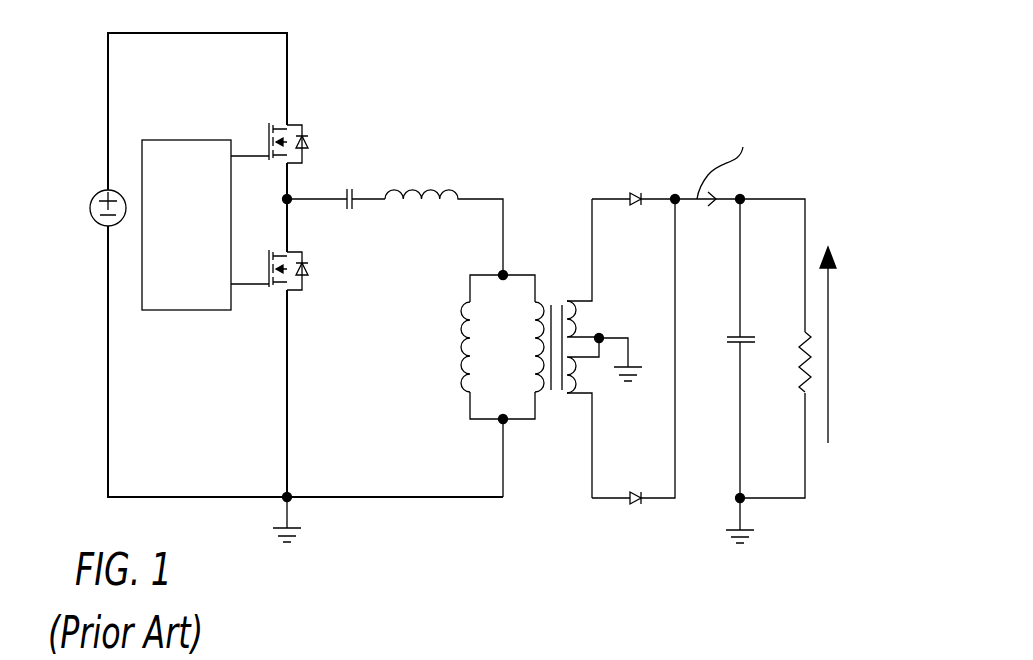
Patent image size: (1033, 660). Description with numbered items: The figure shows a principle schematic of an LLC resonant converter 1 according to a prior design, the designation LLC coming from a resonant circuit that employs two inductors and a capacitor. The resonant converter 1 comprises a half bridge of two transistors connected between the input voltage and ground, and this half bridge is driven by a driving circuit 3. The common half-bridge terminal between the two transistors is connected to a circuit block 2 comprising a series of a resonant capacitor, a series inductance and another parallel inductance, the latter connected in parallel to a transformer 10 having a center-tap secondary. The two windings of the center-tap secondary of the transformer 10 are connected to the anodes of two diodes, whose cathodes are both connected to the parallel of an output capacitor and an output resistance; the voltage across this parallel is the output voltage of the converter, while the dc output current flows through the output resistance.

The resonant converter 1 is at (458, 277).
The circuit block 2 is at (405, 153).
The driving circuit 3 is at (167, 310).
The transformer 10 is at (556, 292).